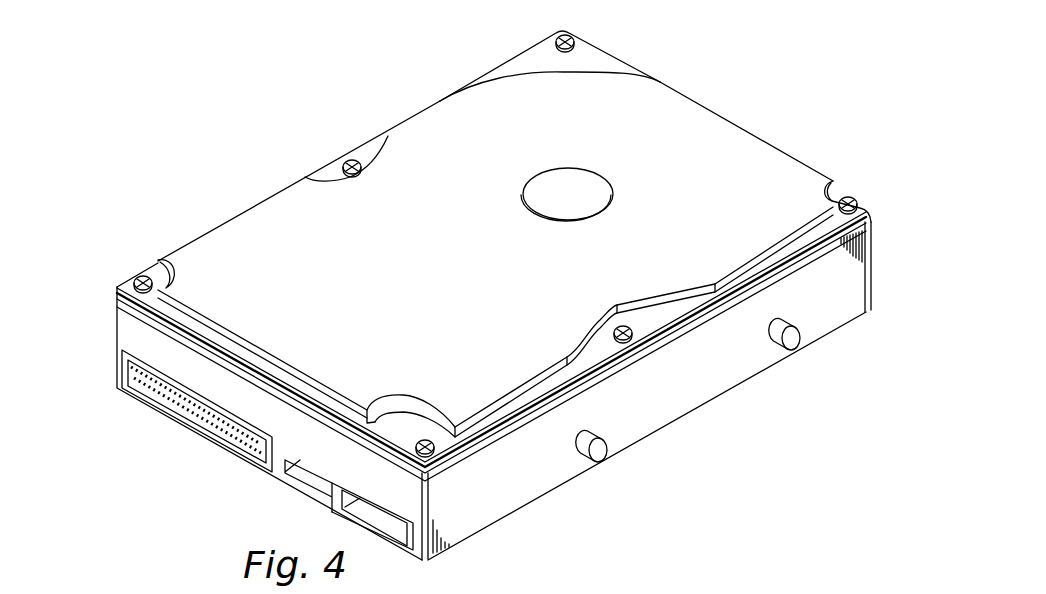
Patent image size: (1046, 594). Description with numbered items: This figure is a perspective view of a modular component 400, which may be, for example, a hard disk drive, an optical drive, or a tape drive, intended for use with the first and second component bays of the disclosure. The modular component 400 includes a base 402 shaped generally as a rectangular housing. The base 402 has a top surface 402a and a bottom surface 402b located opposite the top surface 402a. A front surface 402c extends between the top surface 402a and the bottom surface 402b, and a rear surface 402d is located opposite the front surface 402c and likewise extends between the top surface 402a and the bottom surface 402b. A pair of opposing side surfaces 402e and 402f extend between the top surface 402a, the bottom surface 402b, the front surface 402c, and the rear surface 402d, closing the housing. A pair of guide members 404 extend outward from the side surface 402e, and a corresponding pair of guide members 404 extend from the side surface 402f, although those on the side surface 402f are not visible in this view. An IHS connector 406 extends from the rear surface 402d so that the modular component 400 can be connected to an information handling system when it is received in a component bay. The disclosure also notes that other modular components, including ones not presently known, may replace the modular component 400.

The modular component 400 is at (391, 76).
The base 402 is at (879, 286).
The top surface 402a is at (437, 281).
The bottom surface 402b is at (560, 488).
The front surface 402c is at (724, 108).
The rear surface 402d is at (128, 329).
The side surface 402e is at (693, 402).
The side surface 402f is at (252, 208).
The guide members 404 is at (600, 434).
The IHS connector 406 is at (196, 418).